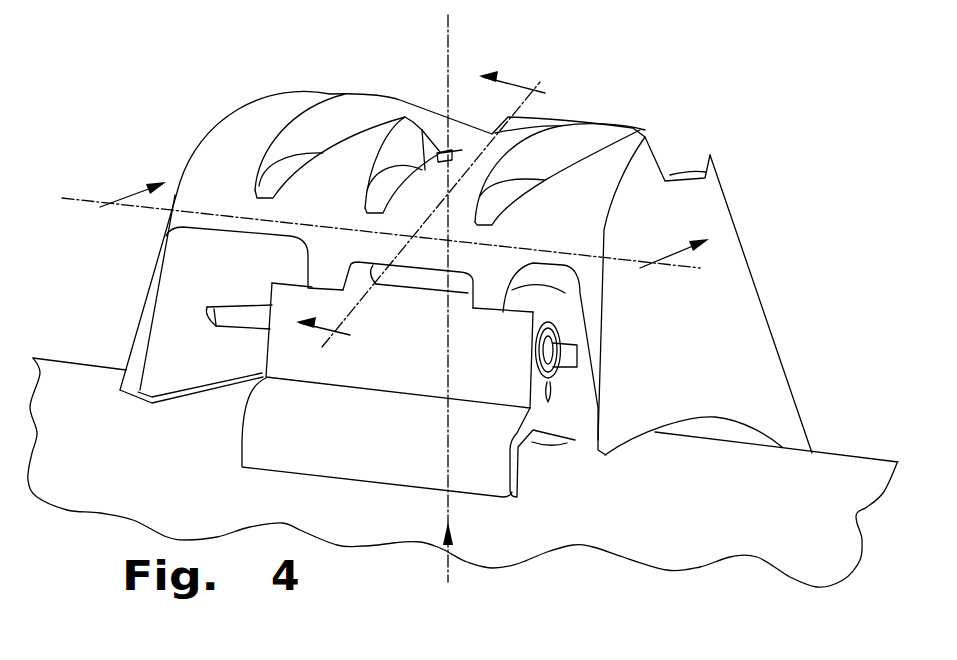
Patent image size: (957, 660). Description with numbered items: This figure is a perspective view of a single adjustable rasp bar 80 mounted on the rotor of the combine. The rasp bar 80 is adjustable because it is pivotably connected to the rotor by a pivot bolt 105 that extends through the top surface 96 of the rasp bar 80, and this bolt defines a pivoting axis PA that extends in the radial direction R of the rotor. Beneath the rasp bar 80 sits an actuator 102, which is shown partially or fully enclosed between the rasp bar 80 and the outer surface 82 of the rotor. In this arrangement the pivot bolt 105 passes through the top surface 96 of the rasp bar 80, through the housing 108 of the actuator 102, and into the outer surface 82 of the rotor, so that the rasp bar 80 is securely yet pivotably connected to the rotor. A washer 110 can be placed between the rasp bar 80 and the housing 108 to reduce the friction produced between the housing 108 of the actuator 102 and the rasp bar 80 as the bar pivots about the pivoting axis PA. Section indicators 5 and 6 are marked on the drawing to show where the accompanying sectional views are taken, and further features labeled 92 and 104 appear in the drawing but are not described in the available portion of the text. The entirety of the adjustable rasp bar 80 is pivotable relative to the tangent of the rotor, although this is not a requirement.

The rasp bar 80 is at (634, 158).
The side wall 92 is at (712, 203).
The top surface 96 is at (400, 180).
The pivot bolt 105 is at (440, 153).
The housing 108 is at (560, 298).
The washer 110 is at (428, 282).
The actuator 102 is at (262, 424).
The fastener 104 is at (567, 360).
The outer surface 82 is at (115, 468).
The pivoting axis PA is at (445, 440).
The radial direction R is at (447, 560).
The section line 5 is at (385, 236).
The section line 6 is at (421, 209).